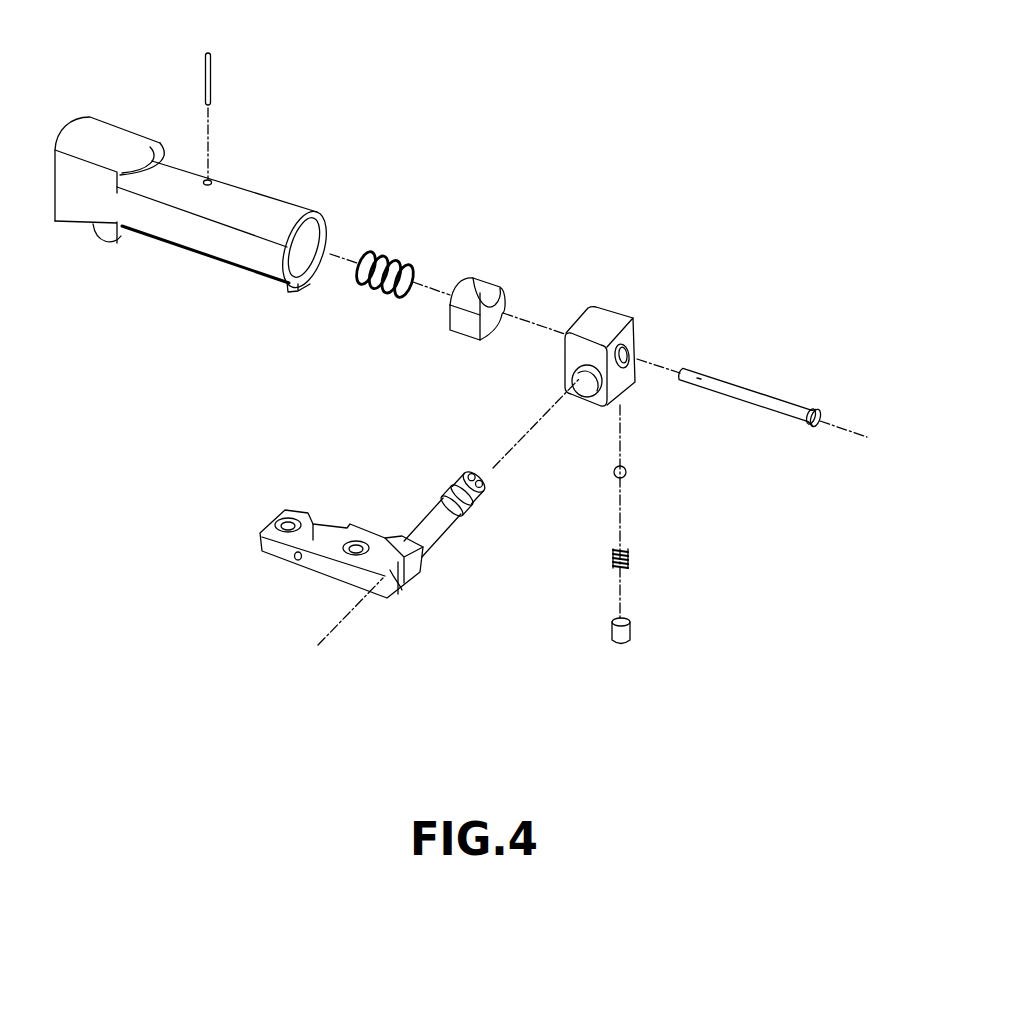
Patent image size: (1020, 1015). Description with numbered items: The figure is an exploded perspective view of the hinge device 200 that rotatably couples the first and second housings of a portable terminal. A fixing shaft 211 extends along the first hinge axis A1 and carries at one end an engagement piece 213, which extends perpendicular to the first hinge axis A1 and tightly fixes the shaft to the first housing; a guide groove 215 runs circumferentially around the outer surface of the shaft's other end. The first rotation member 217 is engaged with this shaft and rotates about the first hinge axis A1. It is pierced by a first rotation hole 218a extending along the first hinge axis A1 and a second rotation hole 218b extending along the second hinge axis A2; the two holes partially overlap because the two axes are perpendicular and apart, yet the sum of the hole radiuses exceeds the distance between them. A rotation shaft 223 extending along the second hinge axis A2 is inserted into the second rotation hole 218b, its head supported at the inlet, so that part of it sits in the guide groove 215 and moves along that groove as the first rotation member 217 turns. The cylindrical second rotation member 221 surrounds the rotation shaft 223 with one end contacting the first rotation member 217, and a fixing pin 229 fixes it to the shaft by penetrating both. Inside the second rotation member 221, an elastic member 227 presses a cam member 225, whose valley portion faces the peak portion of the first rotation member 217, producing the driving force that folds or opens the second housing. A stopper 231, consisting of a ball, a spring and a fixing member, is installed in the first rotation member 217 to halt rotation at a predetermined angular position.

The hinge device 200 is at (520, 29).
The fixing shaft 211 is at (433, 538).
The engagement piece 213 is at (312, 568).
The guide groove 215 is at (457, 483).
The first rotation member 217 is at (603, 317).
The first rotation hole 218a is at (584, 396).
The second rotation hole 218b is at (627, 352).
The second rotation member 221 is at (273, 203).
The rotation shaft 223 is at (757, 392).
The cam member 225 is at (480, 277).
The elastic member 227 is at (390, 257).
The fixing pin 229 is at (211, 77).
The stopper 231 is at (642, 463).
The first hinge axis A1 is at (344, 621).
The second hinge axis A2 is at (833, 418).